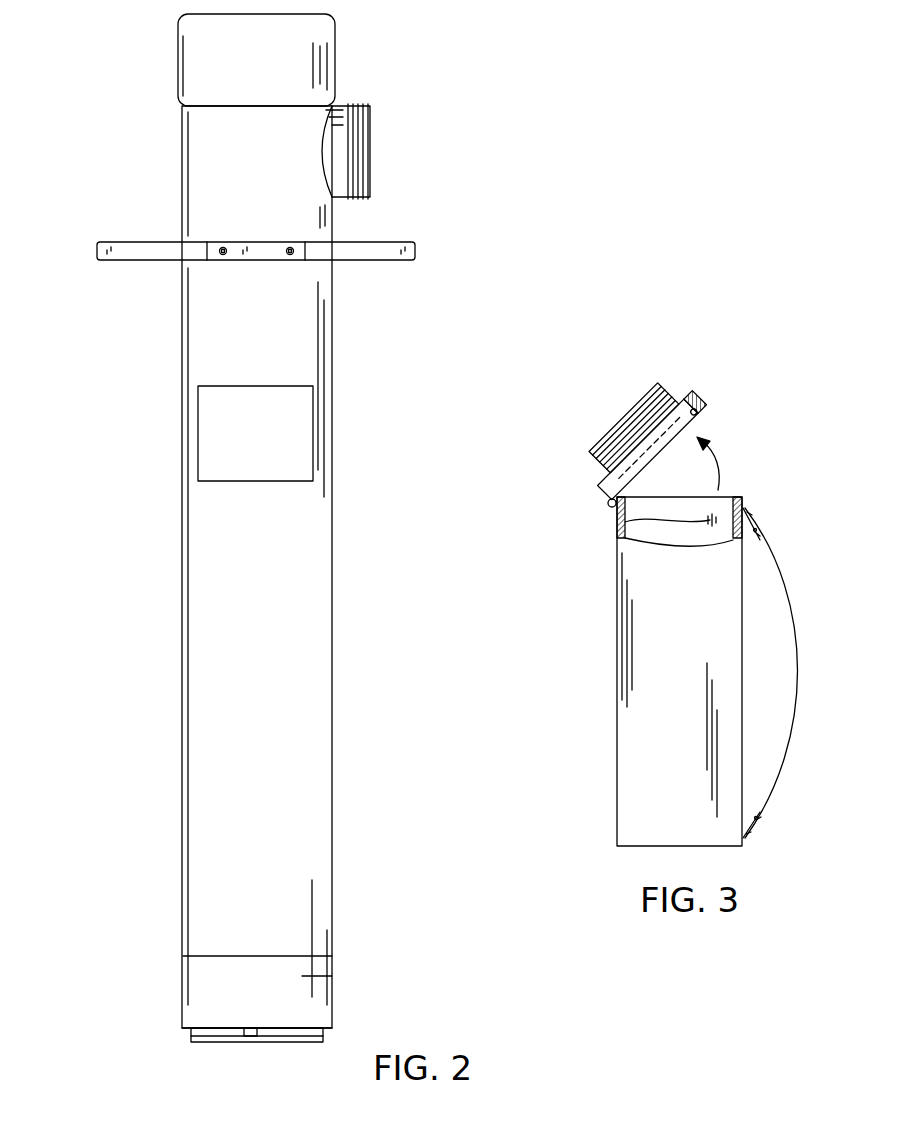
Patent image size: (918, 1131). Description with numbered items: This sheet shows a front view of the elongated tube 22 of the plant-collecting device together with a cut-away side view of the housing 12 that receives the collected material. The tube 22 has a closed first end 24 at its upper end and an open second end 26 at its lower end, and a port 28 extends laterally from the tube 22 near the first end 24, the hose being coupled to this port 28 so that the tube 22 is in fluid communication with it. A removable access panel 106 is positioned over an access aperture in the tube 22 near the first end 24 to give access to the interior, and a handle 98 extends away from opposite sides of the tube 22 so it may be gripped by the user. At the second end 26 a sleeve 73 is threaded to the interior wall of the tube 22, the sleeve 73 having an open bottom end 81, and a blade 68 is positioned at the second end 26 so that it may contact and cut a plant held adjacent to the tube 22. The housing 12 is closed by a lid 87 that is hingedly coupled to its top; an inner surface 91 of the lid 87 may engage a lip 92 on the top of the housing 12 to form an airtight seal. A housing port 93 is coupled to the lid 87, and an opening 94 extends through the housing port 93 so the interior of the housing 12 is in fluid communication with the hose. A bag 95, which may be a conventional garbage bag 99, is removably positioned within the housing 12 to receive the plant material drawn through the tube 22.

In FIG. 3, the housing 12 is at (574, 672).
In FIG. 2, the tube 22 is at (148, 470).
In FIG. 2, the first end 24 is at (178, 65).
In FIG. 2, the second end 26 is at (183, 950).
In FIG. 2, the port 28 is at (370, 108).
In FIG. 2, the blade 68 is at (228, 1051).
In FIG. 2, the sleeve 73 is at (302, 976).
In FIG. 2, the open bottom end 81 is at (332, 1027).
In FIG. 3, the lid 87 is at (690, 398).
In FIG. 3, the inner surface 91 is at (696, 431).
In FIG. 3, the lip 92 is at (743, 497).
In FIG. 3, the housing port 93 is at (598, 440).
In FIG. 3, the opening 94 is at (620, 398).
In FIG. 3, the bag 95 is at (727, 500).
In FIG. 2, the handle 98 is at (97, 250).
In FIG. 3, the garbage bag 99 is at (617, 537).
In FIG. 2, the access panel 106 is at (310, 385).